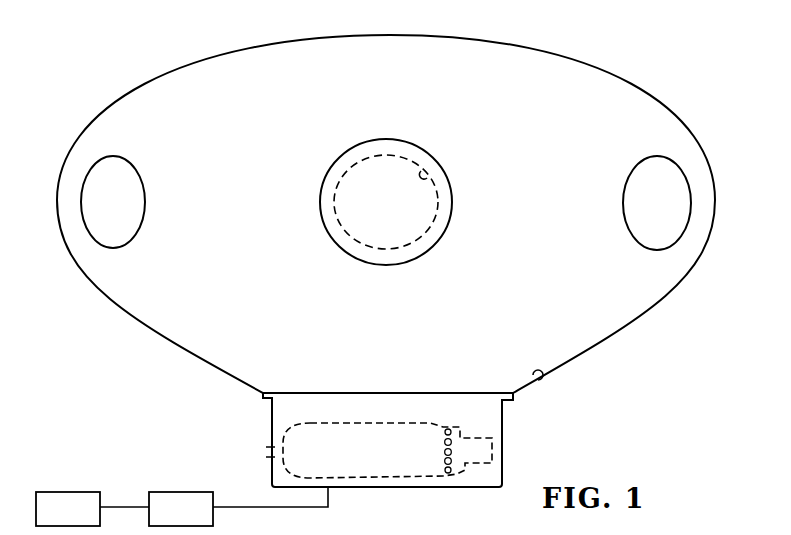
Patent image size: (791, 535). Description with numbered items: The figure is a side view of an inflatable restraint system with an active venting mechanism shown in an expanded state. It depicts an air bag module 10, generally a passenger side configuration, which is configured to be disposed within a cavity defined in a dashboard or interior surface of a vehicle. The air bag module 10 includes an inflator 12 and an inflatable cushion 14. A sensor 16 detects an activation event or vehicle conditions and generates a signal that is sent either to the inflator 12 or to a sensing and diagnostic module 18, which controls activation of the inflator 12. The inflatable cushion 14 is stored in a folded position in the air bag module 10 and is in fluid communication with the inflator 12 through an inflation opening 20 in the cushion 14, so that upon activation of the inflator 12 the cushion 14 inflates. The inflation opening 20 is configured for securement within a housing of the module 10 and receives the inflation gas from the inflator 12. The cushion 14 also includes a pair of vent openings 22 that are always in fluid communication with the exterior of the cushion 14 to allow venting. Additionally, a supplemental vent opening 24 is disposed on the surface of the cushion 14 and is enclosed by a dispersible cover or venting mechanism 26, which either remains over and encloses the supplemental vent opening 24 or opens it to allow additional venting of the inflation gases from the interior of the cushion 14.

The air bag module 10 is at (533, 440).
The inflator 12 is at (400, 477).
The inflatable cushion 14 is at (623, 330).
The sensor 16 is at (72, 497).
The sensing and diagnostic module 18 is at (185, 497).
The inflation opening 20 is at (540, 378).
The vent openings 22 is at (130, 162).
The supplemental vent opening 24 is at (427, 177).
The venting mechanism 26 is at (335, 160).